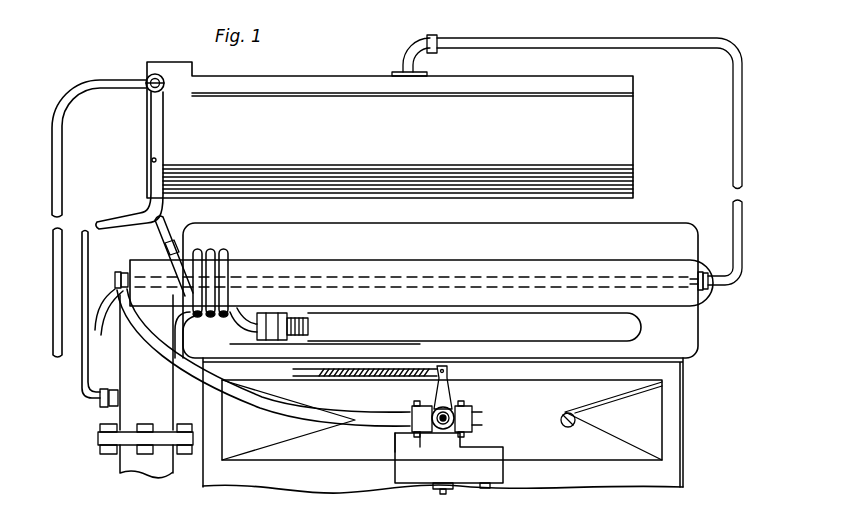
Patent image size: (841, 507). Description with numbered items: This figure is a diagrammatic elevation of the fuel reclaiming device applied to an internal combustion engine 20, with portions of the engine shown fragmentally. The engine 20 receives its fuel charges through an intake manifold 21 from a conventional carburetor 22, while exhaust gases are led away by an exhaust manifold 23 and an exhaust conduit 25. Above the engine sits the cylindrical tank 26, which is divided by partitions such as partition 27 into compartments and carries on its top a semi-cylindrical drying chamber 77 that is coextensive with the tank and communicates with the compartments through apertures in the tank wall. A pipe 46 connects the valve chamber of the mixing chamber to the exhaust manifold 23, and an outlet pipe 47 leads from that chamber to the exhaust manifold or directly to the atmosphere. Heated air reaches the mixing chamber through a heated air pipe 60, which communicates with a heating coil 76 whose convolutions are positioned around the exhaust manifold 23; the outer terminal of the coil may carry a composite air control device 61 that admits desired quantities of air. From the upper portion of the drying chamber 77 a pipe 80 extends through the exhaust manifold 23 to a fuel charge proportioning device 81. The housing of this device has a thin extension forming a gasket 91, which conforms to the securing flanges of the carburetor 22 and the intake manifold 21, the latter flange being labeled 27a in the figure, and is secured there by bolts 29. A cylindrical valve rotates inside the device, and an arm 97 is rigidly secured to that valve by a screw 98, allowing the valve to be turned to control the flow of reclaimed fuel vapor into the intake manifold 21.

The internal combustion engine 20 is at (700, 352).
The intake manifold 21 is at (637, 327).
The carburetor 22 is at (507, 457).
The exhaust manifold 23 is at (637, 260).
The exhaust conduit 25 is at (127, 465).
The tank 26 is at (633, 135).
The partition 27 is at (475, 416).
The valve flange 27a is at (473, 412).
The bolts 29 is at (448, 397).
The pipe 46 is at (118, 203).
The outlet pipe 47 is at (62, 138).
The heated air pipe 60 is at (150, 131).
The composite air control device 61 is at (285, 314).
The heating coil 76 is at (226, 262).
The drying chamber 77 is at (633, 88).
The pipe 80 is at (740, 146).
The fuel charge proportioning device 81 is at (418, 435).
The gasket 91 is at (474, 420).
The arm 97 is at (445, 366).
The screw 98 is at (437, 434).